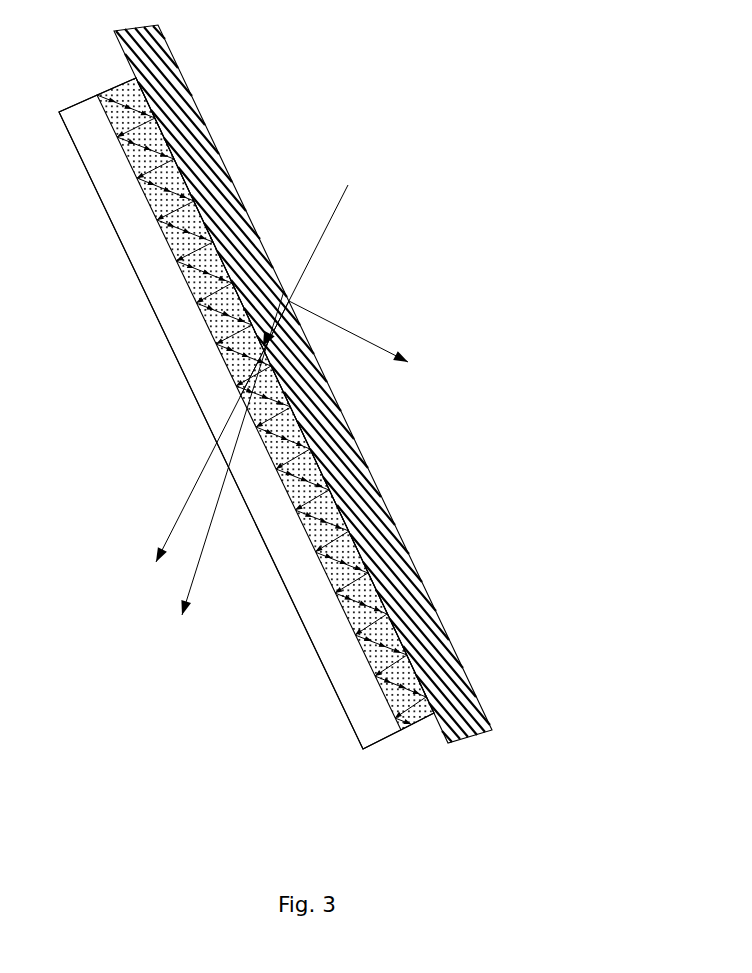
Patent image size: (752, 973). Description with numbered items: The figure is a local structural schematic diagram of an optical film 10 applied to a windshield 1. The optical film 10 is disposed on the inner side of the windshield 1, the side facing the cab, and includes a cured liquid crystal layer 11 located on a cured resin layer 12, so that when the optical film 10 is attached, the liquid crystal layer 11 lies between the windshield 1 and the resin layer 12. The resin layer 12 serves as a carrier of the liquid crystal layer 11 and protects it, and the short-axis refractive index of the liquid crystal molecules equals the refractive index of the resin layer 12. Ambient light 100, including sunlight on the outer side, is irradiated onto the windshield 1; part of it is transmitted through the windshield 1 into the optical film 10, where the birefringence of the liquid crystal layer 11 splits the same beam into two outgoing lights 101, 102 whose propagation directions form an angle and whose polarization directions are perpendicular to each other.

The windshield 1 is at (482, 710).
The optical film 10 is at (381, 811).
The liquid crystal layer 11 is at (407, 730).
The resin layer 12 is at (357, 748).
The ambient light 100 is at (340, 203).
The outgoing light 101 is at (190, 492).
The outgoing light 102 is at (207, 532).